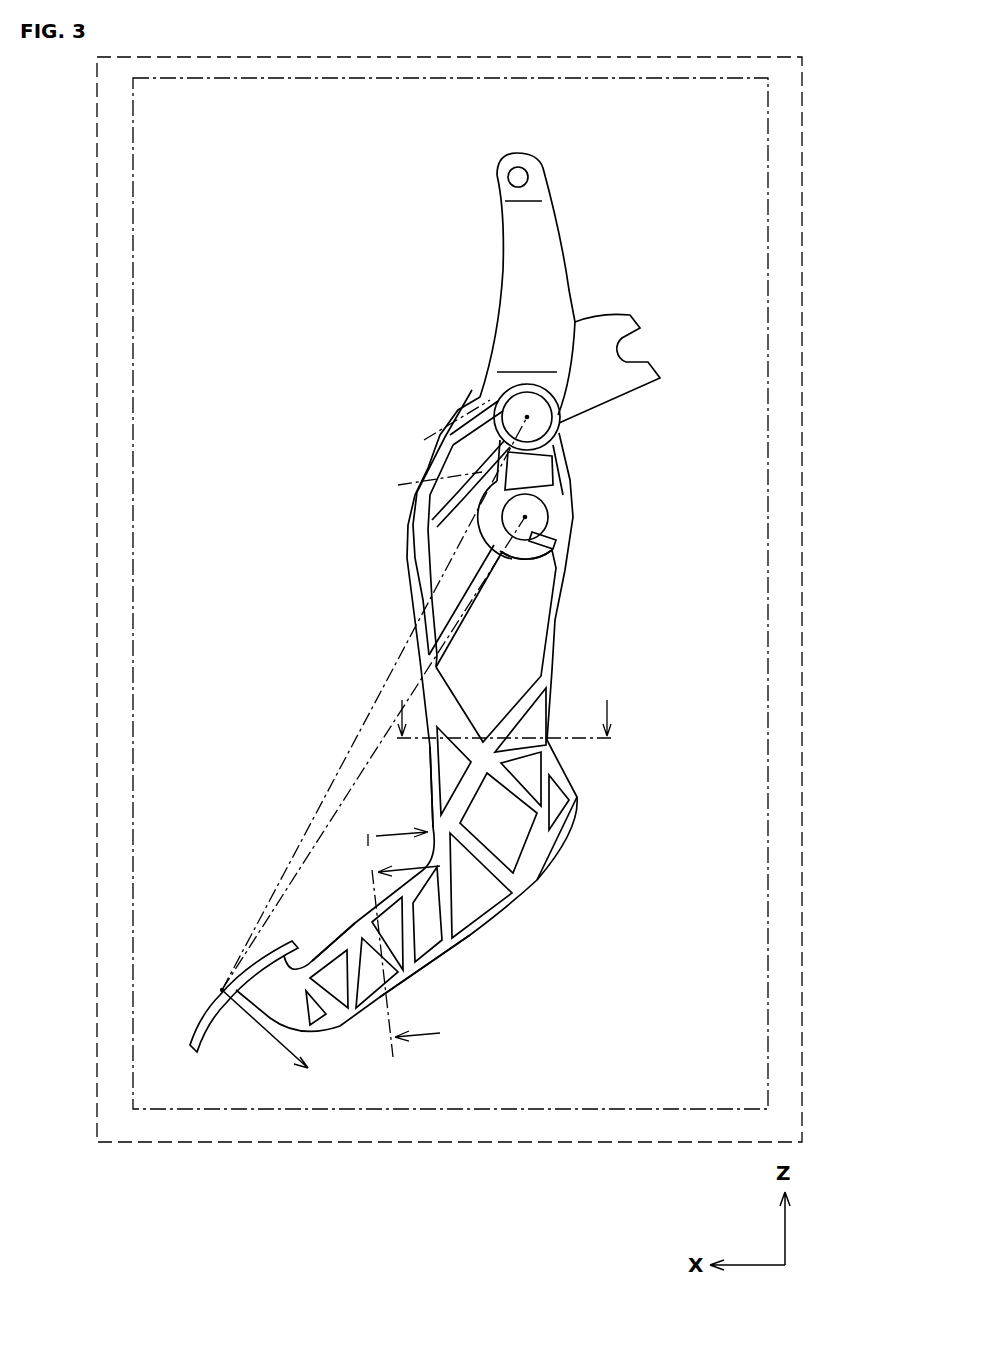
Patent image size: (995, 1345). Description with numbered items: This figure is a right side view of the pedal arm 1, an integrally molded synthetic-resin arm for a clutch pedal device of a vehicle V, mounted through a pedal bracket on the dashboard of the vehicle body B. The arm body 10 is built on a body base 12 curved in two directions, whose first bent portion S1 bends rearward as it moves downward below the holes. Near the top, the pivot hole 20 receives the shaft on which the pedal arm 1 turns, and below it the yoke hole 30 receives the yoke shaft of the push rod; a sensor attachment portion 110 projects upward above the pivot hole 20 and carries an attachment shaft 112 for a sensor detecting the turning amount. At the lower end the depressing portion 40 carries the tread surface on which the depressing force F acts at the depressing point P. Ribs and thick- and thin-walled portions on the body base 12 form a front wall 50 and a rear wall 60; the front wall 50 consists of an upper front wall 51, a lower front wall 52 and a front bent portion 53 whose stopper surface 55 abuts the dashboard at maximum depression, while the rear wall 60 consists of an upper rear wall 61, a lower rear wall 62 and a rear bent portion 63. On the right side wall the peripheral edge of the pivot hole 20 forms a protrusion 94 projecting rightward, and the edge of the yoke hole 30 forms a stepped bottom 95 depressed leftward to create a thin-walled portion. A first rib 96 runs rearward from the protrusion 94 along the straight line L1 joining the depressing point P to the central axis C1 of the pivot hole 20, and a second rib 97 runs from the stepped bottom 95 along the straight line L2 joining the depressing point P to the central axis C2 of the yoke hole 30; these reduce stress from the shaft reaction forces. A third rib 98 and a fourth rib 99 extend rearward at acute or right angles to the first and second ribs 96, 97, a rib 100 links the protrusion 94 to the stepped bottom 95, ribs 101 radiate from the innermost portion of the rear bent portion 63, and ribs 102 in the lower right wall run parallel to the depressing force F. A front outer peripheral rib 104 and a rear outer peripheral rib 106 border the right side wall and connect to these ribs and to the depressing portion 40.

The pedal arm 1 is at (372, 270).
The arm body 10 is at (386, 360).
The sensor attachment portion 110 is at (570, 281).
The attachment shaft 112 is at (522, 170).
The protrusion 94 is at (558, 427).
The pivot hole 20 is at (549, 432).
The yoke hole 30 is at (540, 537).
The front wall 50 is at (660, 562).
The upper front wall 51 is at (468, 700).
The lower front wall 52 is at (462, 985).
The front bent portion 53 is at (570, 897).
The stopper surface 55 is at (573, 827).
The rear wall 60 is at (331, 633).
The upper rear wall 61 is at (385, 505).
The lower rear wall 62 is at (362, 892).
The rear bent portion 63 is at (413, 820).
The stepped bottom 95 is at (555, 504).
The first rib 96 is at (437, 572).
The second rib 97 is at (457, 648).
The third rib 98 is at (477, 405).
The fourth rib 99 is at (450, 490).
The rib 100 is at (530, 476).
The rib 101 is at (515, 713).
The rib 102 is at (505, 787).
The front outer peripheral rib 104 is at (547, 680).
The rear outer peripheral rib 106 is at (430, 750).
The body base 12 is at (510, 670).
The depressing portion 40 is at (195, 978).
The central axis of the pivot hole C1 is at (528, 414).
The central axis of the yoke hole C2 is at (540, 520).
The straight line L1 is at (323, 792).
The straight line L2 is at (358, 790).
The depressing point P is at (220, 985).
The depressing force F is at (273, 1042).
The first bent portion S1 is at (640, 879).
The vehicle V is at (834, 172).
The vehicle body B is at (792, 328).